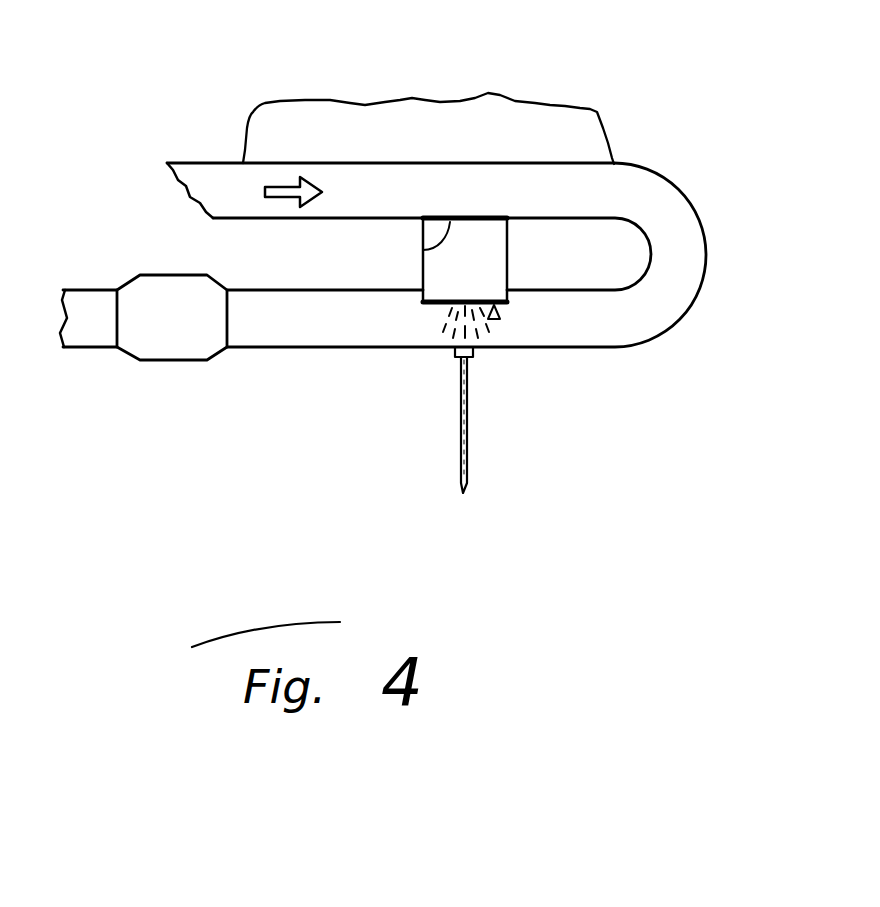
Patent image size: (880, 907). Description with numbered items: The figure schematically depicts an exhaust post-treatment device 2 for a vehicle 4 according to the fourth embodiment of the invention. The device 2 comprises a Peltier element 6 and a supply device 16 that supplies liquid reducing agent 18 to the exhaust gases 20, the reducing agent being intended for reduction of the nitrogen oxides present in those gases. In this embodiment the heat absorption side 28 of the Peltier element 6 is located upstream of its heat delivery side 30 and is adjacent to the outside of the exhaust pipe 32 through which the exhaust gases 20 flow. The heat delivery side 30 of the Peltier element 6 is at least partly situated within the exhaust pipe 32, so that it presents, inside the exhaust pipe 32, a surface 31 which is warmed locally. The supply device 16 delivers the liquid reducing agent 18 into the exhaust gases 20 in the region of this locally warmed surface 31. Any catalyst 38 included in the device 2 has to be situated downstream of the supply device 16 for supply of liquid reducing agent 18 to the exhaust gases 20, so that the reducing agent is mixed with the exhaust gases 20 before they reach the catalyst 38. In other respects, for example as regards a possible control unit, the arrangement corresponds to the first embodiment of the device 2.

The exhaust post-treatment device 2 is at (638, 152).
The vehicle 4 is at (570, 128).
The Peltier element 6 is at (495, 268).
The supply device 16 is at (453, 357).
The liquid reducing agent 18 is at (465, 372).
The exhaust gases 20 is at (580, 210).
The heat absorption side 28 is at (423, 250).
The heat delivery side 30 is at (440, 305).
The surface 31 is at (494, 320).
The exhaust pipe 32 is at (288, 350).
The catalyst 38 is at (160, 323).